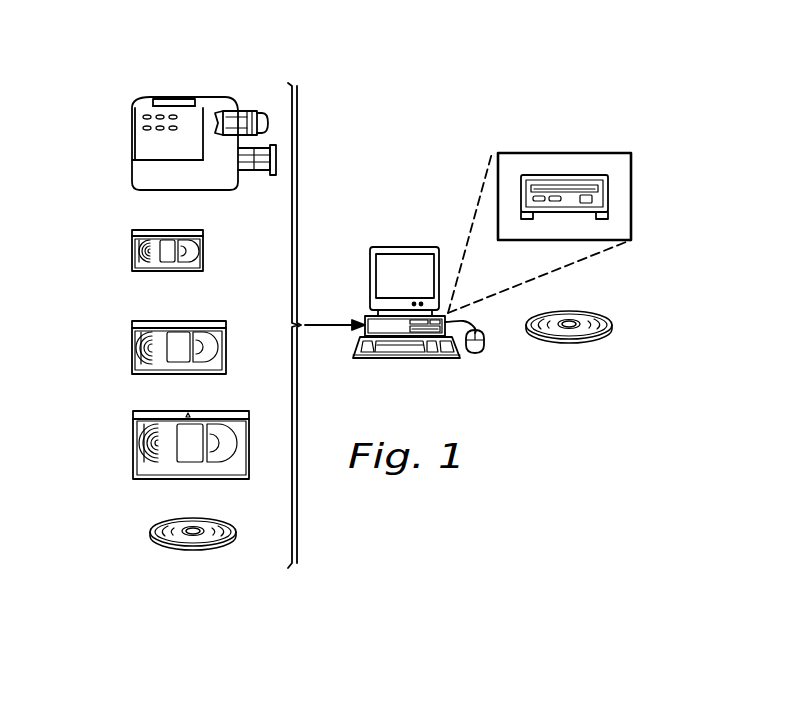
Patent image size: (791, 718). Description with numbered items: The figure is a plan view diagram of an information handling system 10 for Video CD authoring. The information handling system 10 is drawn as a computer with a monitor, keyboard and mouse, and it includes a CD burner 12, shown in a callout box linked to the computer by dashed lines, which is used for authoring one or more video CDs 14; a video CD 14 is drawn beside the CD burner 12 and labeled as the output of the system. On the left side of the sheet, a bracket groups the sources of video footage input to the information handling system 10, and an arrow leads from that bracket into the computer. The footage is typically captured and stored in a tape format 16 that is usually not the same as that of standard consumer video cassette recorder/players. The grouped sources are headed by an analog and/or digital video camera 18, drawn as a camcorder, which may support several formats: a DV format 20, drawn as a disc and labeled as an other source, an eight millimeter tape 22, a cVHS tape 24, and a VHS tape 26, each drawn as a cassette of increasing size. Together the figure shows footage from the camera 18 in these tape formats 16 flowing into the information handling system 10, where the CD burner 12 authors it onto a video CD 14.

The information handling system 10 is at (427, 125).
The CD burner 12 is at (631, 197).
The video CD 14 is at (572, 345).
The tape format 16 is at (173, 70).
The video camera 18 is at (132, 148).
The DV tape format 20 is at (150, 530).
The 8 mm tape format 22 is at (132, 348).
The cVHS tape format 24 is at (132, 250).
The VHS tape format 26 is at (133, 442).